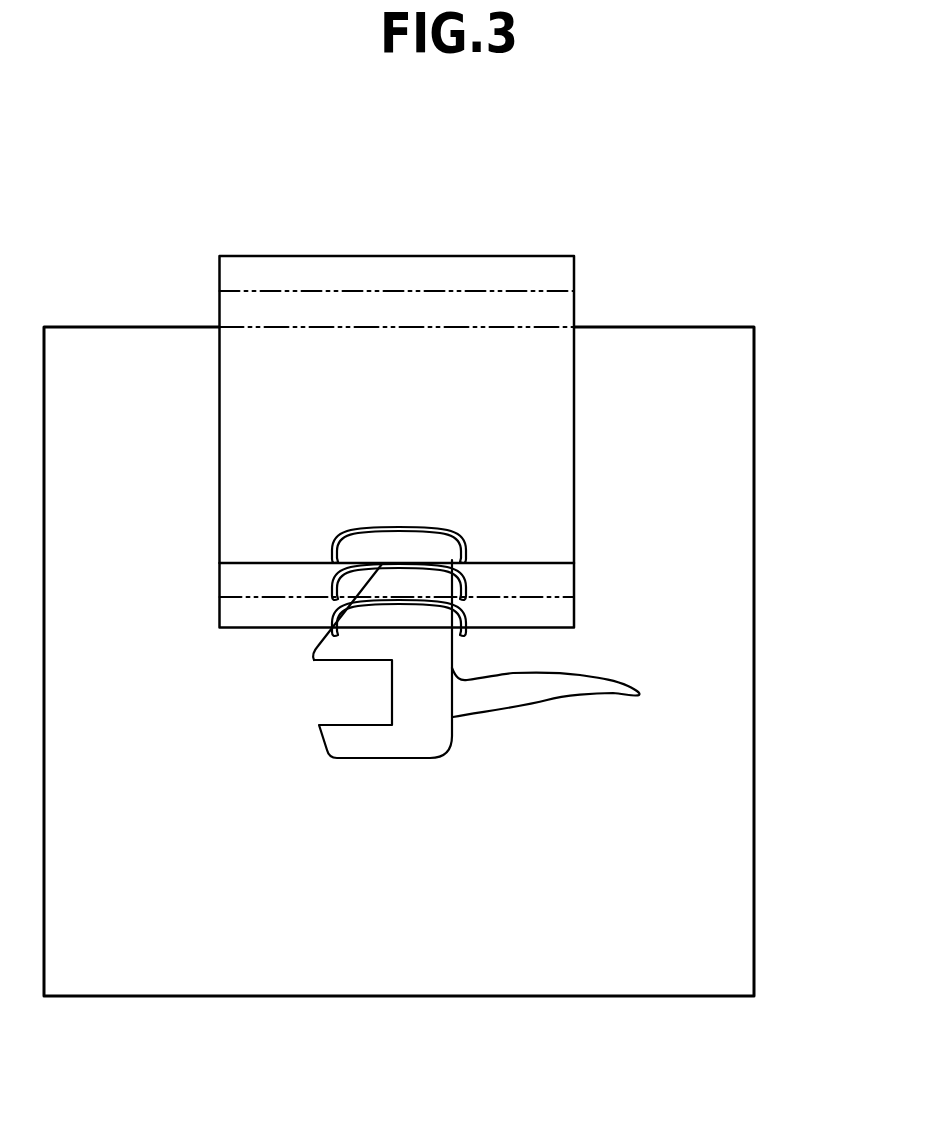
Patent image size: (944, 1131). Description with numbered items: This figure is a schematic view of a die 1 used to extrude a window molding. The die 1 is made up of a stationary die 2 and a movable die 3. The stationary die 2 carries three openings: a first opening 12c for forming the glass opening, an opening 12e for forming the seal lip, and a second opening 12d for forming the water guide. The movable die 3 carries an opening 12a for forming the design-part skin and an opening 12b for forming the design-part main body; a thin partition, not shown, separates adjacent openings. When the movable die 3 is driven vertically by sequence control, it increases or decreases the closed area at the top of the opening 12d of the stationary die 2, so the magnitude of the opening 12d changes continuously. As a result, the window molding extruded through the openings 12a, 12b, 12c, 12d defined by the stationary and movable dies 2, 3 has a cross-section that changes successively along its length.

The die 1 is at (772, 887).
The stationary die 2 is at (246, 988).
The movable die 3 is at (528, 270).
The opening 12a is at (396, 541).
The opening 12b is at (432, 537).
The opening 12c is at (437, 750).
The opening 12d is at (383, 622).
The opening 12e is at (552, 687).